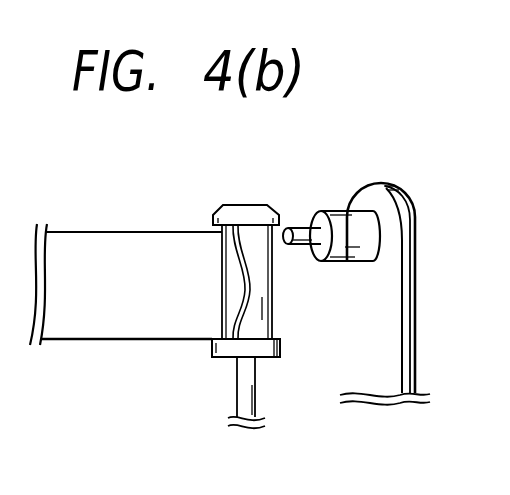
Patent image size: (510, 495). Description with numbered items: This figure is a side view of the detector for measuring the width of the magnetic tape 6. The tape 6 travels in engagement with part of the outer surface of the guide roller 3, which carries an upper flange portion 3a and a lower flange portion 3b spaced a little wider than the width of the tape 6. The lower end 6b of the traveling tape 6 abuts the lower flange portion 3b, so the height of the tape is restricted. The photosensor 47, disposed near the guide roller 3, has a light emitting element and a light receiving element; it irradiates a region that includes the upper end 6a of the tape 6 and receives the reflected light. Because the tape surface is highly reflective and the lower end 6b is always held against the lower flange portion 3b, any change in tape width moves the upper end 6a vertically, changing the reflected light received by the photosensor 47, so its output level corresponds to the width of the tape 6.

The guide roller 3 is at (279, 288).
The upper flange portion 3a is at (243, 210).
The lower flange portion 3b is at (280, 347).
The magnetic tape 6 is at (126, 271).
The upper end of the magnetic tape 6a is at (118, 230).
The lower end of the magnetic tape 6b is at (138, 342).
The photosensor 47 is at (307, 222).